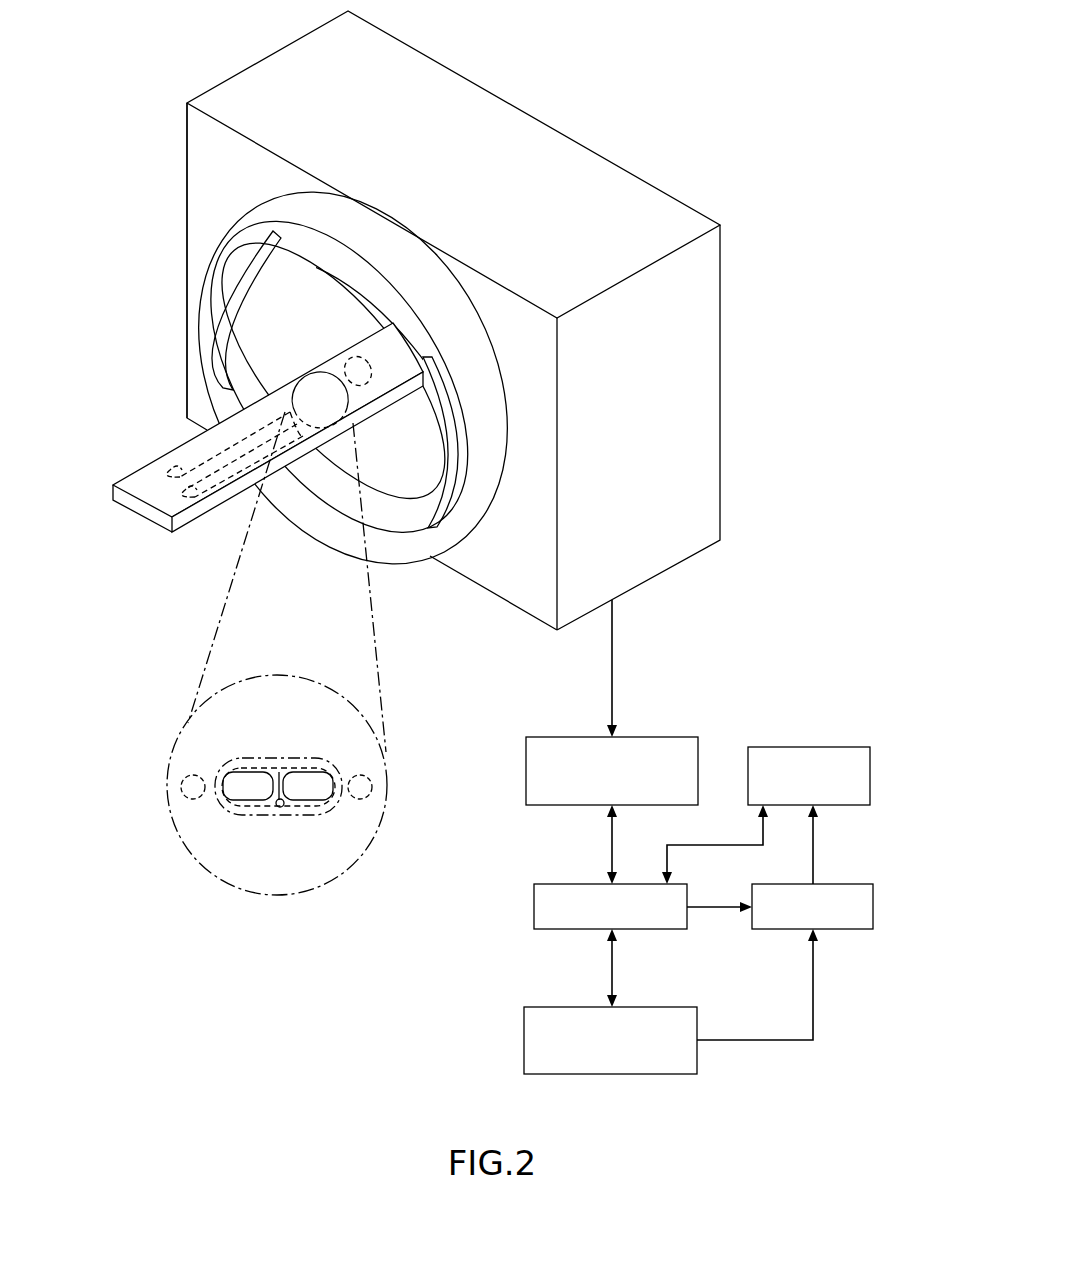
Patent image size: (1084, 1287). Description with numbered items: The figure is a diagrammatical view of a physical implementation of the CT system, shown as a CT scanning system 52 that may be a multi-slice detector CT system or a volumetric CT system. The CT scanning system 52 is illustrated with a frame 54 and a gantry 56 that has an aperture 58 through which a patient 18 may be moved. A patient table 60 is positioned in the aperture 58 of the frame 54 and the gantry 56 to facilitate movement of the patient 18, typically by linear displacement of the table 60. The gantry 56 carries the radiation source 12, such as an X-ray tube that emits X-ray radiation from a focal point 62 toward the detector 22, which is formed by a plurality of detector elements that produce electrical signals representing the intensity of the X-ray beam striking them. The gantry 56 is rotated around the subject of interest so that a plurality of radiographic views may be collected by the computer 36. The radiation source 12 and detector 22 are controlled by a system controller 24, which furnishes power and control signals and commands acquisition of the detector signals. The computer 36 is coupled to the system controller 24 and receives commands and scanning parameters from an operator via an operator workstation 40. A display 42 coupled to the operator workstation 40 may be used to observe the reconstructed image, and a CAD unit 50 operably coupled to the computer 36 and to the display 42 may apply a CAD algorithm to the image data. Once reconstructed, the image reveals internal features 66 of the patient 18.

The radiation source 12 is at (217, 342).
The patient 18 is at (200, 449).
The detector 22 is at (450, 497).
The system controller 24 is at (270, 896).
The computer 36 is at (534, 908).
The operator workstation 40 is at (524, 1040).
The display 42 is at (855, 884).
The computer aided diagnosis (CAD) unit 50 is at (807, 747).
The CT scanning system 52 is at (640, 171).
The frame 54 is at (722, 380).
The gantry 56 is at (338, 541).
The aperture 58 is at (342, 303).
The patient table 60 is at (162, 528).
The focal point 62 is at (252, 303).
The internal features 66 is at (293, 760).